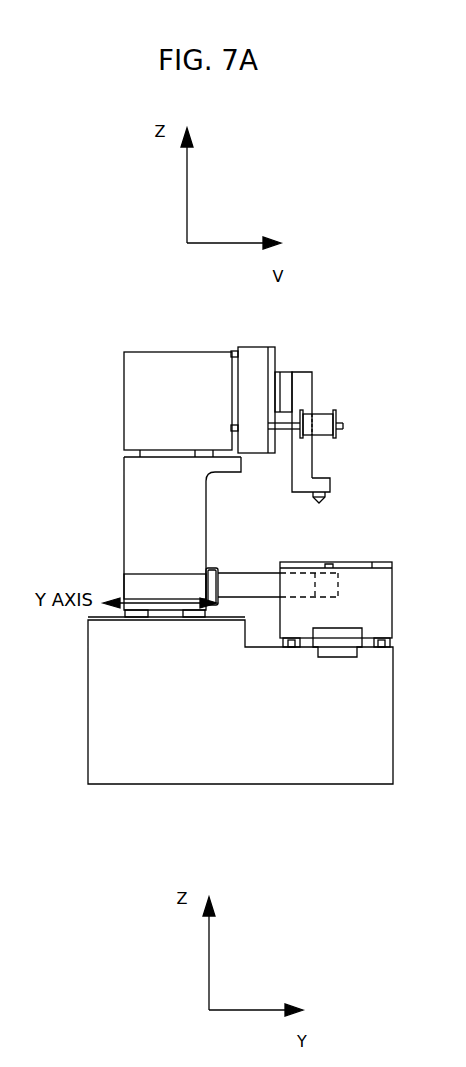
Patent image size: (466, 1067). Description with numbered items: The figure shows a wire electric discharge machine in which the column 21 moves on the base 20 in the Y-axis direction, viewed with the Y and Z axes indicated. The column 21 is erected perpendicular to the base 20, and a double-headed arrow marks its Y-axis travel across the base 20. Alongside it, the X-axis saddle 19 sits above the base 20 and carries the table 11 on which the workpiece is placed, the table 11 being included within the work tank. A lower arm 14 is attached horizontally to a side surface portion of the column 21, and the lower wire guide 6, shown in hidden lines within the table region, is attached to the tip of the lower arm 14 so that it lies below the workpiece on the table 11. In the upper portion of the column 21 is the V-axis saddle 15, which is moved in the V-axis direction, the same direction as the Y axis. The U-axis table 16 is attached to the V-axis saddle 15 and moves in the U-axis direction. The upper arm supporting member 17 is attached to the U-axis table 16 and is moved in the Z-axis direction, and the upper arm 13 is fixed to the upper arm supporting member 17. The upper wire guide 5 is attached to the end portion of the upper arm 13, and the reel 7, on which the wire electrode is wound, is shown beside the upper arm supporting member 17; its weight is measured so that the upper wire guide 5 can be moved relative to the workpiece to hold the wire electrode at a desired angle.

The upper wire guide 5 is at (328, 497).
The lower wire guide 6 is at (337, 573).
The reel 7 is at (327, 408).
The table 11 is at (385, 560).
The upper arm 13 is at (315, 480).
The lower arm 14 is at (237, 587).
The V-axis saddle 15 is at (137, 360).
The U-axis table 16 is at (252, 352).
The upper arm supporting member 17 is at (300, 380).
The X-axis saddle 19 is at (385, 622).
The base 20 is at (245, 762).
The column 21 is at (138, 520).